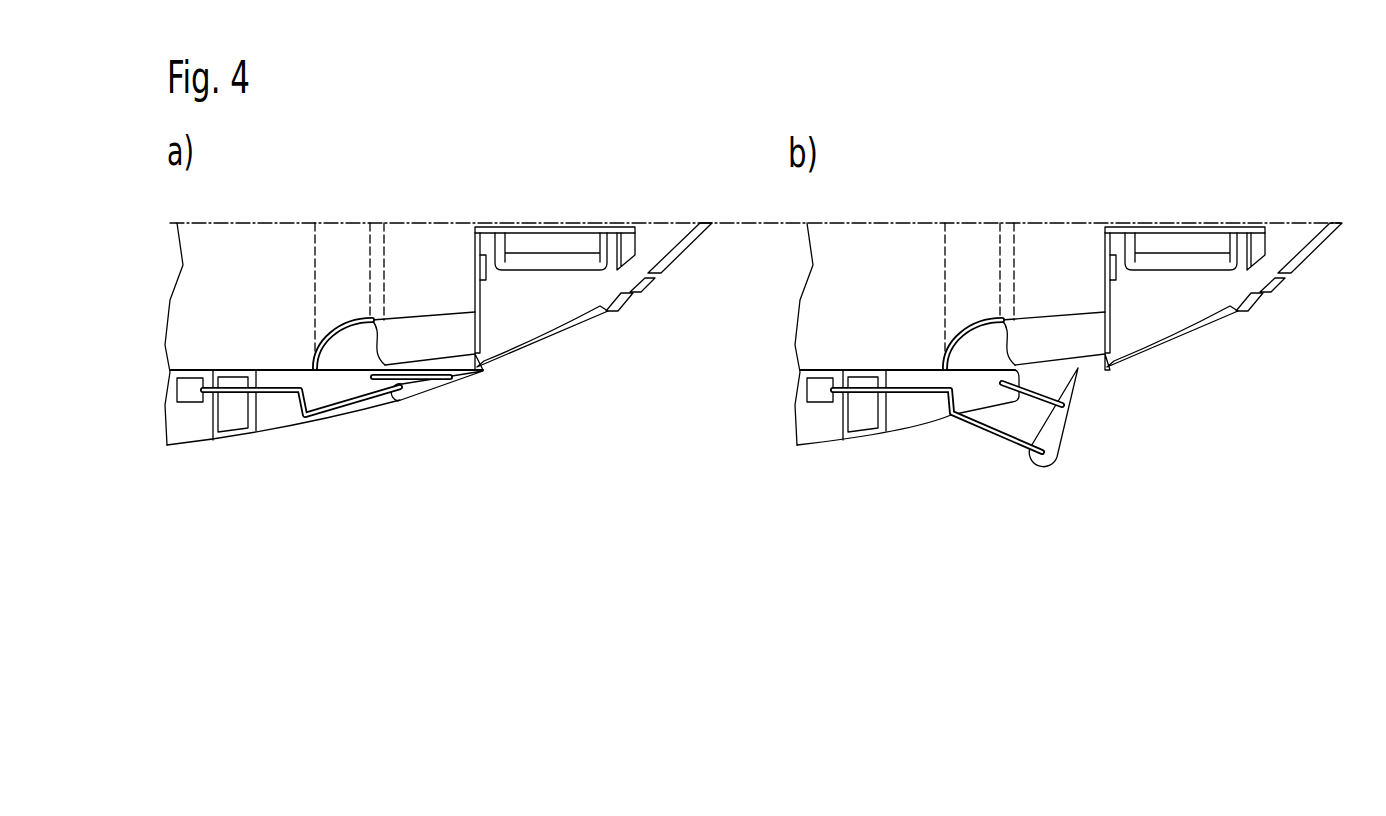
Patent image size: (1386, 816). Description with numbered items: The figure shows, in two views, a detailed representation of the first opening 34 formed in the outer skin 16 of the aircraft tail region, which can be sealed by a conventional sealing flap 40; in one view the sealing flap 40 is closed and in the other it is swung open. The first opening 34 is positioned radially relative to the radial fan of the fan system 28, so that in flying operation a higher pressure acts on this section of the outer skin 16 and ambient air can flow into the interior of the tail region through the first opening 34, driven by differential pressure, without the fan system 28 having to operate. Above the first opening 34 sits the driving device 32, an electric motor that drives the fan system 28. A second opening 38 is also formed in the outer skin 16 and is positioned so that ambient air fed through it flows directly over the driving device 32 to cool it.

The outer skin 16 is at (555, 344).
The fan system 28 is at (427, 222).
The driving device 32 is at (558, 243).
The first opening 34 is at (492, 368).
The second opening 38 is at (642, 293).
The sealing flap 40 is at (415, 390).